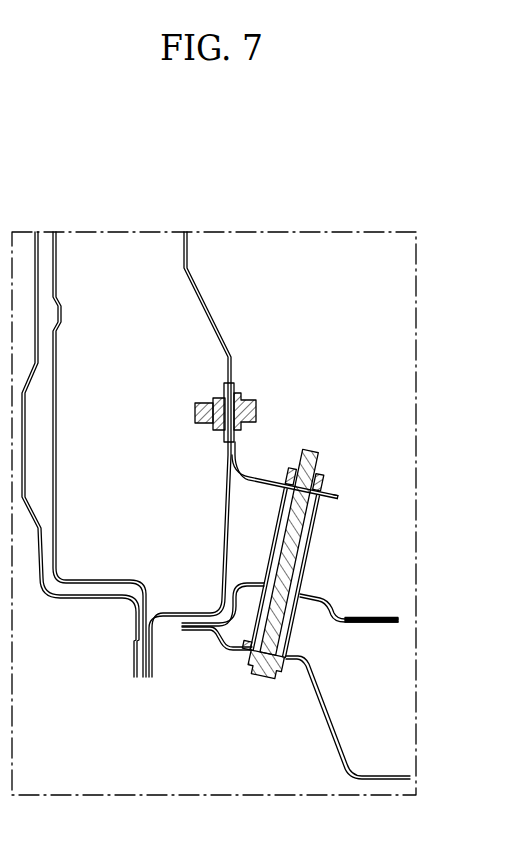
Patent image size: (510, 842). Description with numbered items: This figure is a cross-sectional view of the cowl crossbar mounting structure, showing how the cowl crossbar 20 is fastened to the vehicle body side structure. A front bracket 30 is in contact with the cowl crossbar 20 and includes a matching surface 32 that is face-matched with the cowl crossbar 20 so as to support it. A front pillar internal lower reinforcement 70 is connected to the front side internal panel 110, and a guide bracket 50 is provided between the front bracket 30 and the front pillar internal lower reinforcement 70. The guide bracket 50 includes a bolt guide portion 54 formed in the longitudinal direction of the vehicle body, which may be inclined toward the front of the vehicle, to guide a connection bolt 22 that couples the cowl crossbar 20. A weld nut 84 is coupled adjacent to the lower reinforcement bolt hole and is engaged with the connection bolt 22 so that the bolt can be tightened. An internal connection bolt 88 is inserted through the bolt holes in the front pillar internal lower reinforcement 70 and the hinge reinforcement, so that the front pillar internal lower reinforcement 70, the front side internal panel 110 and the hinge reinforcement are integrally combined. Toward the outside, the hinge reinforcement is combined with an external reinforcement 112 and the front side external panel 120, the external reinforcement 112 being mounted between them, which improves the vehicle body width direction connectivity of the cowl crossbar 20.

The front side internal panel 110 is at (212, 316).
The external reinforcement 112 is at (97, 576).
The front side external panel 120 is at (85, 600).
The internal connection bolt 88 is at (257, 408).
The weld nut 84 is at (320, 470).
The front pillar internal lower reinforcement 70 is at (348, 482).
The guide bracket 50 is at (327, 544).
The bolt guide portion 54 is at (317, 509).
The front bracket 30 is at (316, 579).
The matching surface 32 is at (315, 597).
The connection bolt 22 is at (258, 675).
The cowl crossbar 20 is at (300, 732).